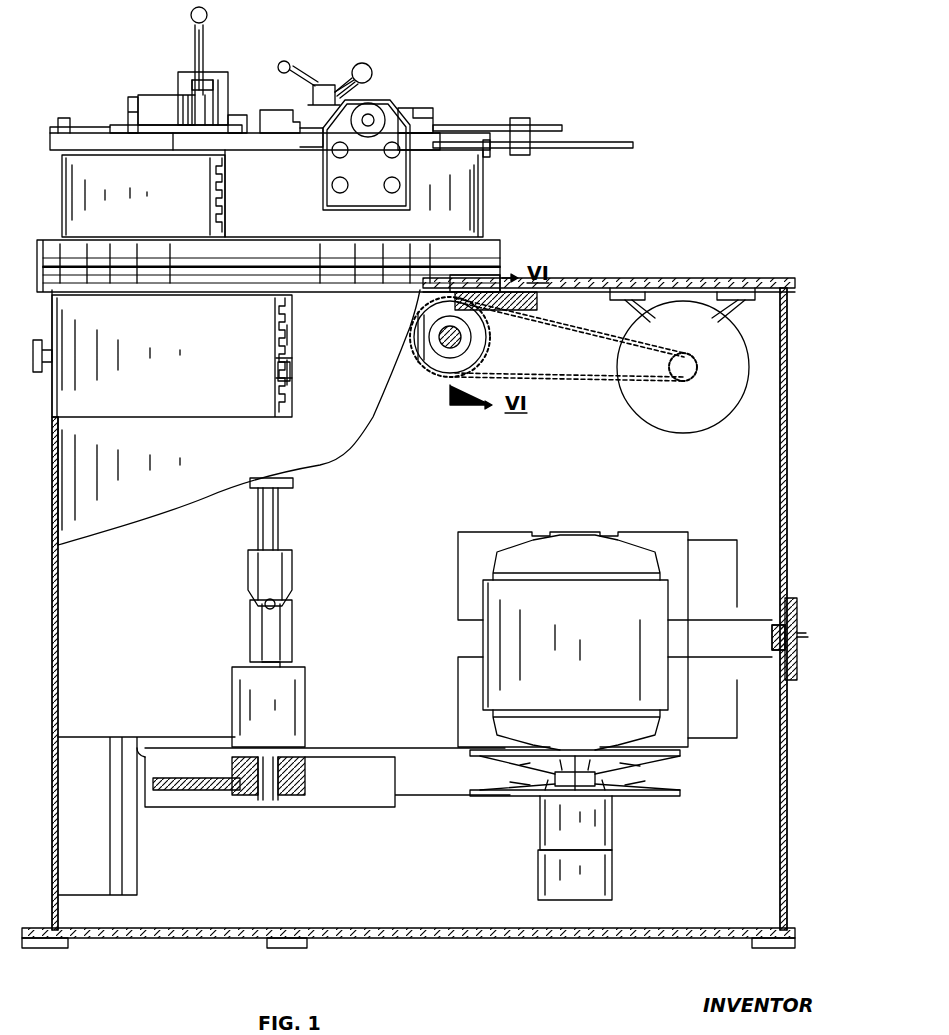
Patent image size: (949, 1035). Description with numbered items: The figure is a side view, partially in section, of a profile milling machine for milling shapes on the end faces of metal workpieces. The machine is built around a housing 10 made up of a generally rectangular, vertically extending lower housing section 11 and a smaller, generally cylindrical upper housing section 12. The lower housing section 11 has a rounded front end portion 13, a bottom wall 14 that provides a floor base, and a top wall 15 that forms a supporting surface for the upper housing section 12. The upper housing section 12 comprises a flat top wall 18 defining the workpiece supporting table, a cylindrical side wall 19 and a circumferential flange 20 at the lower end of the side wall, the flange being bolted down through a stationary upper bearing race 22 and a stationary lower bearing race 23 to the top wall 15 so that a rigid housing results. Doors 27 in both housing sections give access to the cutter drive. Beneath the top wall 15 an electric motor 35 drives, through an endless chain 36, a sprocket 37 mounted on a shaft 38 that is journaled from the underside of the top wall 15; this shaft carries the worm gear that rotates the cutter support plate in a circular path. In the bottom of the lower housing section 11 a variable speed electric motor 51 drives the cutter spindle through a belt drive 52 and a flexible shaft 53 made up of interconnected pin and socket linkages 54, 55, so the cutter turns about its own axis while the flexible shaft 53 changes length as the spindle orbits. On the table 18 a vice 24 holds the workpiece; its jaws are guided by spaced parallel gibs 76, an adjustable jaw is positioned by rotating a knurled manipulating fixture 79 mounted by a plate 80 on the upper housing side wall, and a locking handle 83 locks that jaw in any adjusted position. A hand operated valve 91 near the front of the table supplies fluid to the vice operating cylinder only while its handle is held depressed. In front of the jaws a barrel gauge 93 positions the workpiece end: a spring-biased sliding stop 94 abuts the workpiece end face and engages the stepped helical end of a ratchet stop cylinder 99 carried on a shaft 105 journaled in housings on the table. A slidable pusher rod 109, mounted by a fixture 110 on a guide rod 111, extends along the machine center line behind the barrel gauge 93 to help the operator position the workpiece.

The housing 10 is at (48, 478).
The lower housing section 11 is at (52, 668).
The upper housing section 12 is at (480, 187).
The rounded front end portion 13 is at (82, 522).
The bottom wall 14 is at (400, 930).
The top wall 15 is at (654, 282).
The flat top wall 18 is at (430, 140).
The cylindrical side wall 19 is at (245, 160).
The circumferential flange 20 is at (492, 242).
The upper bearing race 22 is at (500, 266).
The lower bearing race 23 is at (57, 293).
The vice 24 is at (388, 60).
The doors 27 is at (68, 179).
The electric motor 35 is at (686, 420).
The endless chain 36 is at (585, 376).
The sprocket 37 is at (440, 360).
The shaft 38 is at (462, 337).
The variable speed electric motor 51 is at (493, 627).
The belt drive 52 is at (428, 780).
The flexible shaft 53 is at (275, 521).
The pin and socket linkage 54 is at (283, 612).
The pin and socket linkage 55 is at (293, 483).
The gibs 76 is at (272, 116).
The manipulating fixture 79 is at (372, 114).
The plate 80 is at (345, 110).
The locking handle 83 is at (322, 95).
The hand operated valve 91 is at (208, 85).
The barrel gauge 93 is at (147, 60).
The sliding stop 94 is at (82, 132).
The ratchet stop cylinder 99 is at (165, 100).
The shaft 105 is at (135, 108).
The pusher rod 109 is at (562, 127).
The fixture 110 is at (520, 125).
The guide rod 111 is at (636, 133).